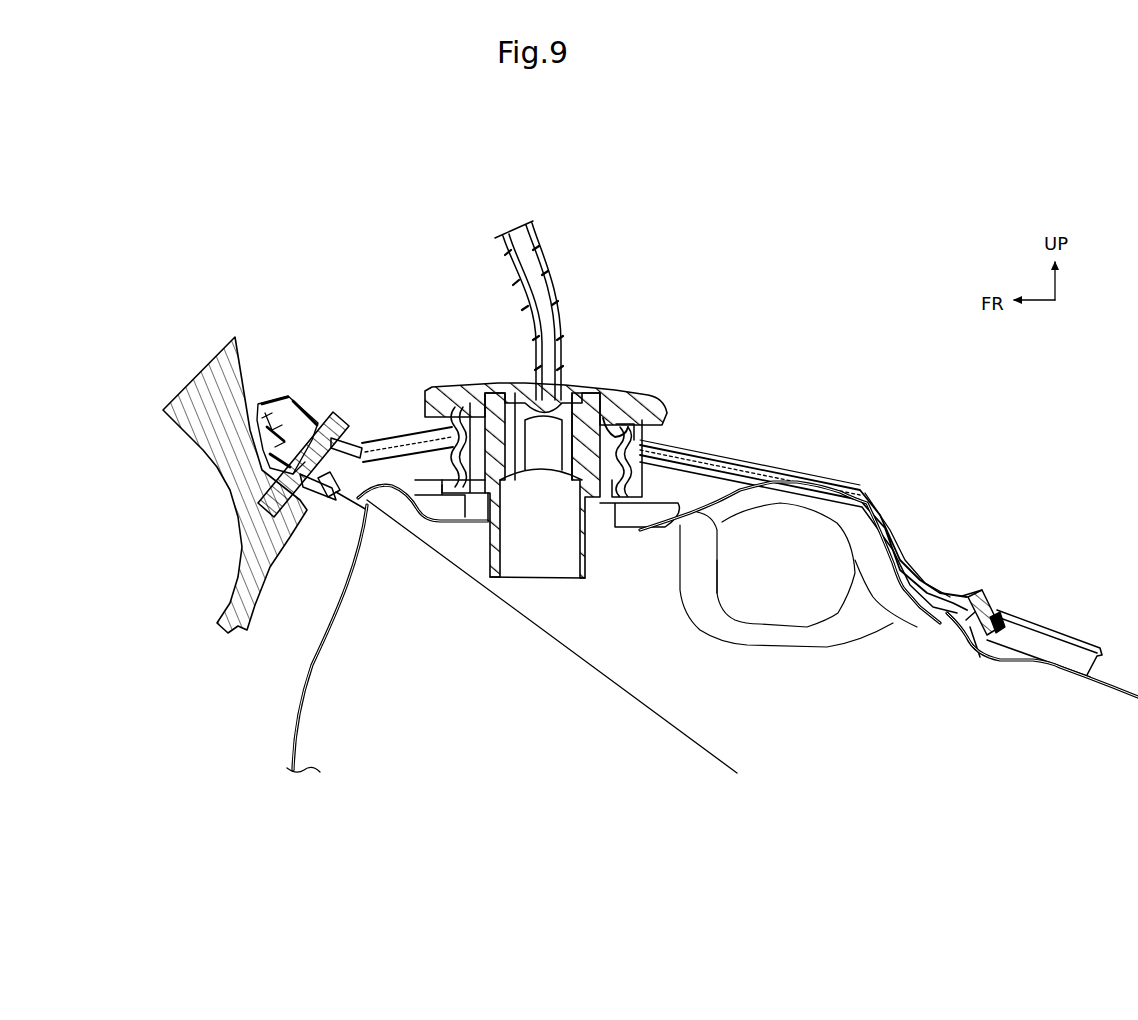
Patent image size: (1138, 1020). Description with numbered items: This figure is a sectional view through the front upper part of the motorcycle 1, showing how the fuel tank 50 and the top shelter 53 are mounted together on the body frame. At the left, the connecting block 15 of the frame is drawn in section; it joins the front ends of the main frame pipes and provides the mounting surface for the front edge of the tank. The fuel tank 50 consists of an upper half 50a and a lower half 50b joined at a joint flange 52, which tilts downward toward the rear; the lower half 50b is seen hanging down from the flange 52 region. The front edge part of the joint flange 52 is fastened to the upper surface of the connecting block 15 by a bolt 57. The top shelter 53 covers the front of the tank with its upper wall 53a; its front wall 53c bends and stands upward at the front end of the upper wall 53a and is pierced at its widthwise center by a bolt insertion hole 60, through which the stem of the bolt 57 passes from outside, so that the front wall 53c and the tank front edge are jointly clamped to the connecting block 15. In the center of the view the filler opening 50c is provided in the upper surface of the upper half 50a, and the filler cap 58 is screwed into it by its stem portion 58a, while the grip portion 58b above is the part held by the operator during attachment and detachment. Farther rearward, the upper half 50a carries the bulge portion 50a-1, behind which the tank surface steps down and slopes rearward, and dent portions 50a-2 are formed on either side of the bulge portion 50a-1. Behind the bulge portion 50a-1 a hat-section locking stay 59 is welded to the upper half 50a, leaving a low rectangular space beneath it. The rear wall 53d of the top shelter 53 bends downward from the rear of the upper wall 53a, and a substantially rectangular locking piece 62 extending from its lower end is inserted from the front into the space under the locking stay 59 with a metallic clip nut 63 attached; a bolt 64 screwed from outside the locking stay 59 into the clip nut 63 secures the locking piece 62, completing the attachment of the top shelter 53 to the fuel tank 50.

The motorcycle 1 is at (829, 315).
The connecting block 15 is at (242, 378).
The fuel tank 50 is at (752, 483).
The upper half 50a is at (1010, 657).
The bulge portion 50a-1 is at (807, 477).
The dent portion 50a-2 is at (767, 587).
The lower half 50b is at (290, 750).
The filler opening 50c is at (604, 423).
The joint flange 52 is at (349, 500).
The top shelter 53 is at (849, 475).
The upper wall 53a is at (728, 456).
The front wall 53c is at (300, 397).
The rear wall 53d is at (887, 520).
The bolt 57 is at (336, 410).
The filler cap 58 is at (607, 388).
The stem portion 58a is at (438, 470).
The grip portion 58b is at (648, 422).
The locking stay 59 is at (1080, 642).
The bolt insertion hole 60 is at (345, 435).
The locking piece 62 is at (996, 604).
The clip nut 63 is at (988, 638).
The bolt 64 is at (973, 593).